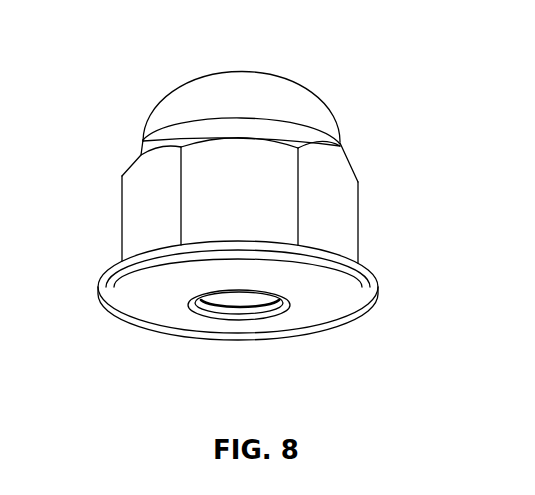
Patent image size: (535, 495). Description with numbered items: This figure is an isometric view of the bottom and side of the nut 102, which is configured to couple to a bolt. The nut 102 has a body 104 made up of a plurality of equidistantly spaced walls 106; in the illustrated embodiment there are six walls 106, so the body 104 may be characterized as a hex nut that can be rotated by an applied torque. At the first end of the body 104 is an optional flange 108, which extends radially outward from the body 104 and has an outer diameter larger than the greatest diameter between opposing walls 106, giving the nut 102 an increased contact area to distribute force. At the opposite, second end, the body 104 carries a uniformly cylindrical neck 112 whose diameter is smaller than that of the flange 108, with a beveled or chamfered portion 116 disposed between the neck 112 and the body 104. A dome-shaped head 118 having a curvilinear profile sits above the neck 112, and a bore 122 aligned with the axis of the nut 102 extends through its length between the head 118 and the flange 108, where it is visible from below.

The nut 102 is at (348, 106).
The body 104 is at (181, 233).
The walls 106 is at (188, 187).
The flange 108 is at (363, 270).
The neck 112 is at (310, 135).
The beveled or chamfered portion 116 is at (181, 147).
The head 118 is at (242, 74).
The bore 122 is at (259, 314).